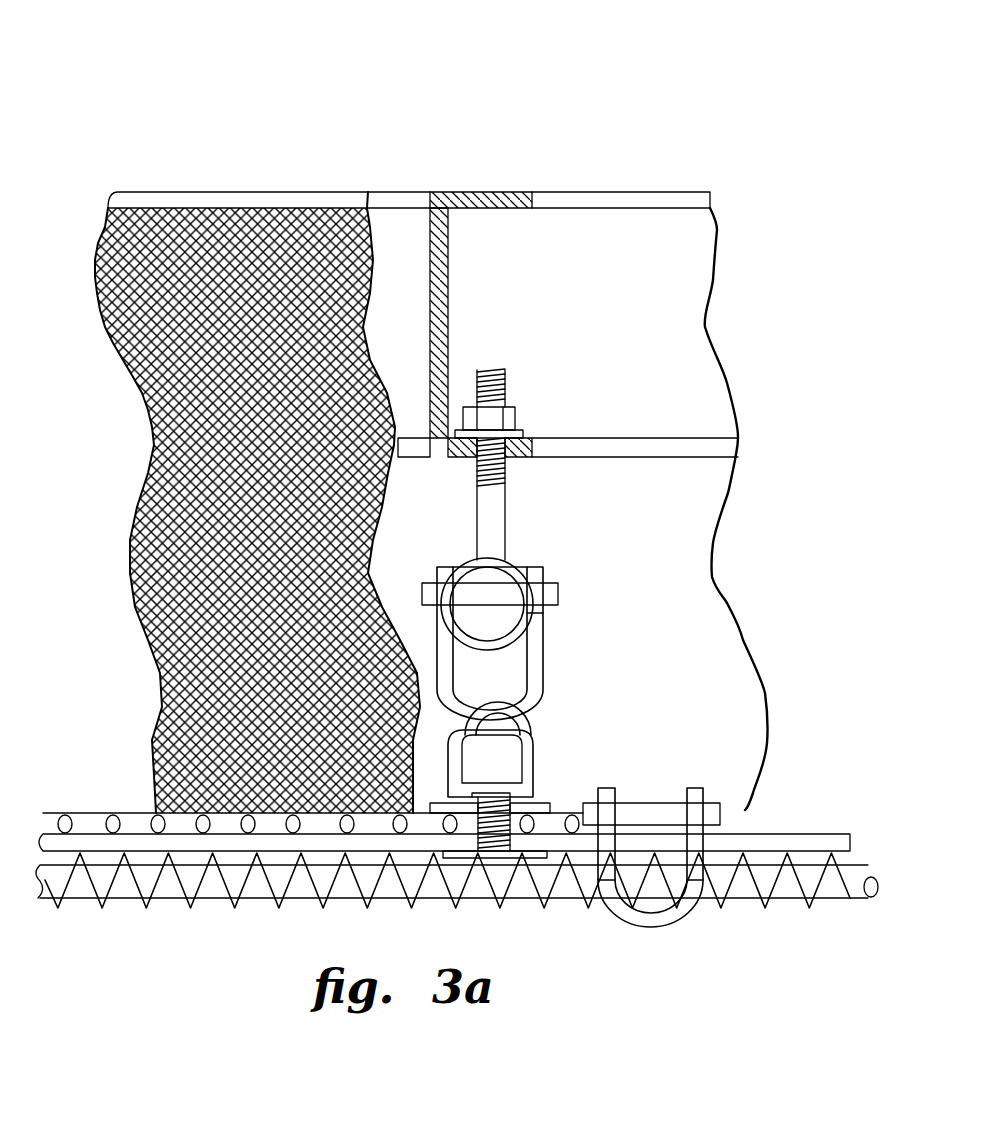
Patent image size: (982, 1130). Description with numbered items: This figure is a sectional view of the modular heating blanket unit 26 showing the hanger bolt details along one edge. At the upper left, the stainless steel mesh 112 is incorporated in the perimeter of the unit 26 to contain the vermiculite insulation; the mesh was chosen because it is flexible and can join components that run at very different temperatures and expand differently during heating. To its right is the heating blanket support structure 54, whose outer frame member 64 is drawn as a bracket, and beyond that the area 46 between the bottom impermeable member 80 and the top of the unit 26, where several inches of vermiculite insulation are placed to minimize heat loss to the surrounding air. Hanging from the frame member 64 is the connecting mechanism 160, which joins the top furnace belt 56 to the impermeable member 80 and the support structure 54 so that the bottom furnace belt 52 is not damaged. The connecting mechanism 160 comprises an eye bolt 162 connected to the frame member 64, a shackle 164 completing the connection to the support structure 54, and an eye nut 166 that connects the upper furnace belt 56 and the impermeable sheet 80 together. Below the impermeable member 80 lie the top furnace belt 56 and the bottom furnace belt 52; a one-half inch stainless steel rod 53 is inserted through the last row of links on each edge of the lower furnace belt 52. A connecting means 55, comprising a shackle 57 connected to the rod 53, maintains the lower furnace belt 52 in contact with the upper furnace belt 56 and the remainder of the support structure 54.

The heating blanket unit 26 is at (253, 135).
The stainless steel mesh 112 is at (262, 297).
The heating blanket support structure 54 is at (514, 178).
The outer frame member 64 is at (633, 445).
The insulation area 46 is at (672, 592).
The connecting mechanism 160 is at (584, 571).
The eye bolt 162 is at (490, 525).
The shackle 164 is at (537, 655).
The eye nut 166 is at (535, 748).
The bottom impermeable member 80 is at (563, 802).
The connecting means 55 is at (668, 784).
The top furnace belt 56 is at (745, 816).
The shackle 57 is at (673, 923).
The bottom furnace belt 52 is at (765, 900).
The stainless steel rod 53 is at (830, 883).